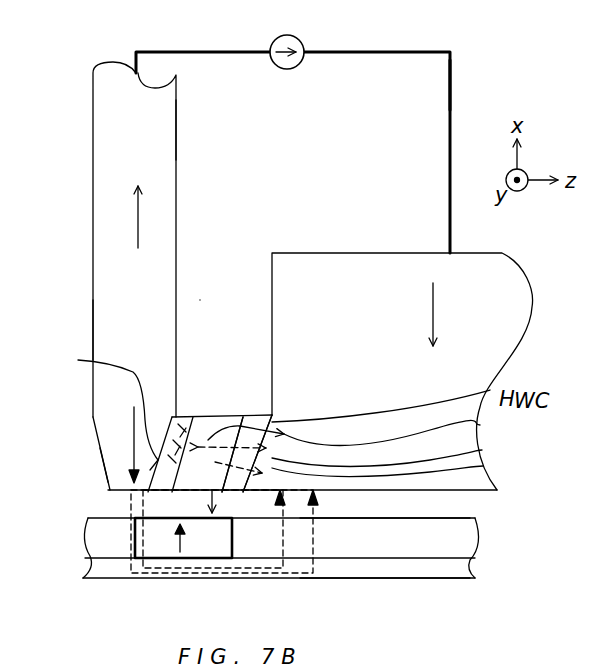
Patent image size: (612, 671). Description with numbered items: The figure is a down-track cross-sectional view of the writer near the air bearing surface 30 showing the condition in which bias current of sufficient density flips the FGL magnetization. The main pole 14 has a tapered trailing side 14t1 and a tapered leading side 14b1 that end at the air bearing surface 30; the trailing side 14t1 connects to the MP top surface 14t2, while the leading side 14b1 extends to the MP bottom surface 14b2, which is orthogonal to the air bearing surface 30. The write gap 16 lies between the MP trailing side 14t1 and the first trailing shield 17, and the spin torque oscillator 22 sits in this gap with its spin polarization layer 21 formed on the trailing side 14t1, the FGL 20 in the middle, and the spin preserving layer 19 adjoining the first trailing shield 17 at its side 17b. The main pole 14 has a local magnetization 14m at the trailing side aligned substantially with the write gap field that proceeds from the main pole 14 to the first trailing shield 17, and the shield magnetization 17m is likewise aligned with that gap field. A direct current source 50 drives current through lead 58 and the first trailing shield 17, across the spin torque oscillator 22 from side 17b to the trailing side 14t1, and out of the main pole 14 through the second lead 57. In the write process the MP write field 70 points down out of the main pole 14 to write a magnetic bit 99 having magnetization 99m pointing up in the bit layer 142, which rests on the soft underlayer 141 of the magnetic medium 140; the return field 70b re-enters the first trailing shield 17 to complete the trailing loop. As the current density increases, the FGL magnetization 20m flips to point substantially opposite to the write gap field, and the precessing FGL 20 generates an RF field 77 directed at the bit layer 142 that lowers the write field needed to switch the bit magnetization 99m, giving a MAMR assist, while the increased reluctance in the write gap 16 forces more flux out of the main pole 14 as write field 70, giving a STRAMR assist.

The main pole 14 is at (93, 138).
The MP top surface 14t2 is at (177, 141).
The MP bottom surface 14b2 is at (92, 332).
The MP trailing side 14t1 is at (94, 404).
The MP leading side 14b1 is at (101, 466).
The local magnetization 14m is at (150, 471).
The second lead 57 is at (178, 52).
The direct current source 50 is at (300, 40).
The lead 58 is at (452, 80).
The write gap 16 is at (247, 250).
The first trailing shield 17 is at (513, 301).
The spin torque oscillator 22 is at (272, 376).
The spin polarization layer 21 is at (180, 418).
The flux guiding layer 20 is at (218, 420).
The spin preserving layer 19 is at (259, 418).
The first TS magnetization 17m is at (478, 425).
The FGL magnetization 20m is at (480, 450).
The first TS side 17b is at (481, 467).
The air bearing surface 30 is at (106, 490).
The MP write field 70 is at (122, 445).
The return field 70b is at (318, 506).
The RF field 77 is at (228, 505).
The magnetic medium 140 is at (542, 520).
The bit layer 142 is at (470, 539).
The soft underlayer 141 is at (468, 573).
The magnetic bit 99 is at (203, 557).
The bit magnetization 99m is at (178, 546).